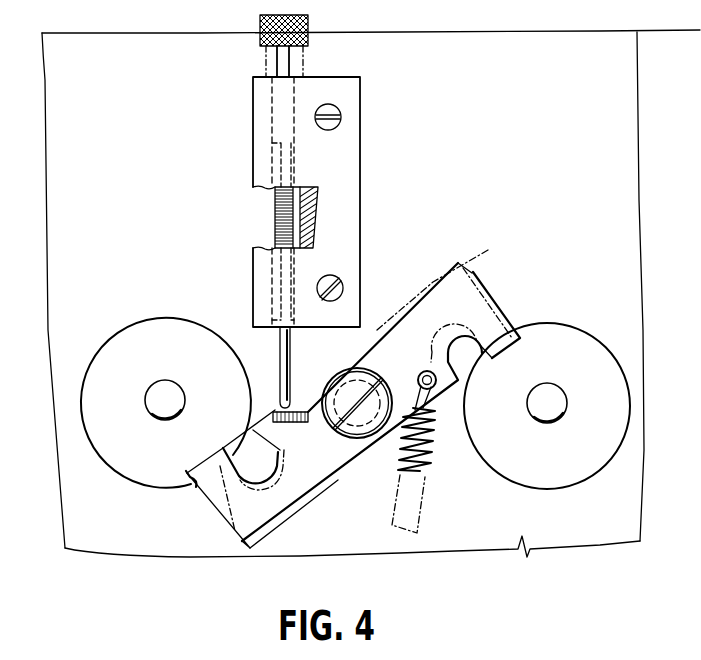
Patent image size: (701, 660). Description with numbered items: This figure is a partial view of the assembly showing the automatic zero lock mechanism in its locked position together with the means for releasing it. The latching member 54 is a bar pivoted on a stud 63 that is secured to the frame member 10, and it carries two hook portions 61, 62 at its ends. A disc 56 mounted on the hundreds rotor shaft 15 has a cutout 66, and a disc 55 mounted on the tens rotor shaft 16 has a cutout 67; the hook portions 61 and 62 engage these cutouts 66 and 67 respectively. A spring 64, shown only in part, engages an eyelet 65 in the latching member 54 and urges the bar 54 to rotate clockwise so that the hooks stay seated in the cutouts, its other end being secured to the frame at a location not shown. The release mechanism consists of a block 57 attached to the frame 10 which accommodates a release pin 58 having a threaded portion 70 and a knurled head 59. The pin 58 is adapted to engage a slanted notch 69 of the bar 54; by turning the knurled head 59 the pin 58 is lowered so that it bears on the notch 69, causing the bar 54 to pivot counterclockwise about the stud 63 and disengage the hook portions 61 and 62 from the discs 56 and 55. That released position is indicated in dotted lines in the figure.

The frame 10 is at (562, 126).
The hundreds rotor shaft 15 is at (184, 399).
The tens rotor shaft 16 is at (557, 395).
The latching member 54 is at (478, 267).
The disc 55 is at (549, 480).
The disc 56 is at (170, 359).
The block 57 is at (361, 108).
The release pin 58 is at (280, 349).
The knurled head 59 is at (260, 40).
The hook portion 61 is at (208, 490).
The hook portion 62 is at (517, 323).
The stud 63 is at (344, 437).
The spring 64 is at (428, 465).
The eyelet 65 is at (433, 401).
The cutout 66 is at (197, 487).
The cutout 67 is at (508, 351).
The slanted notch 69 is at (298, 406).
The threaded portion 70 is at (275, 219).